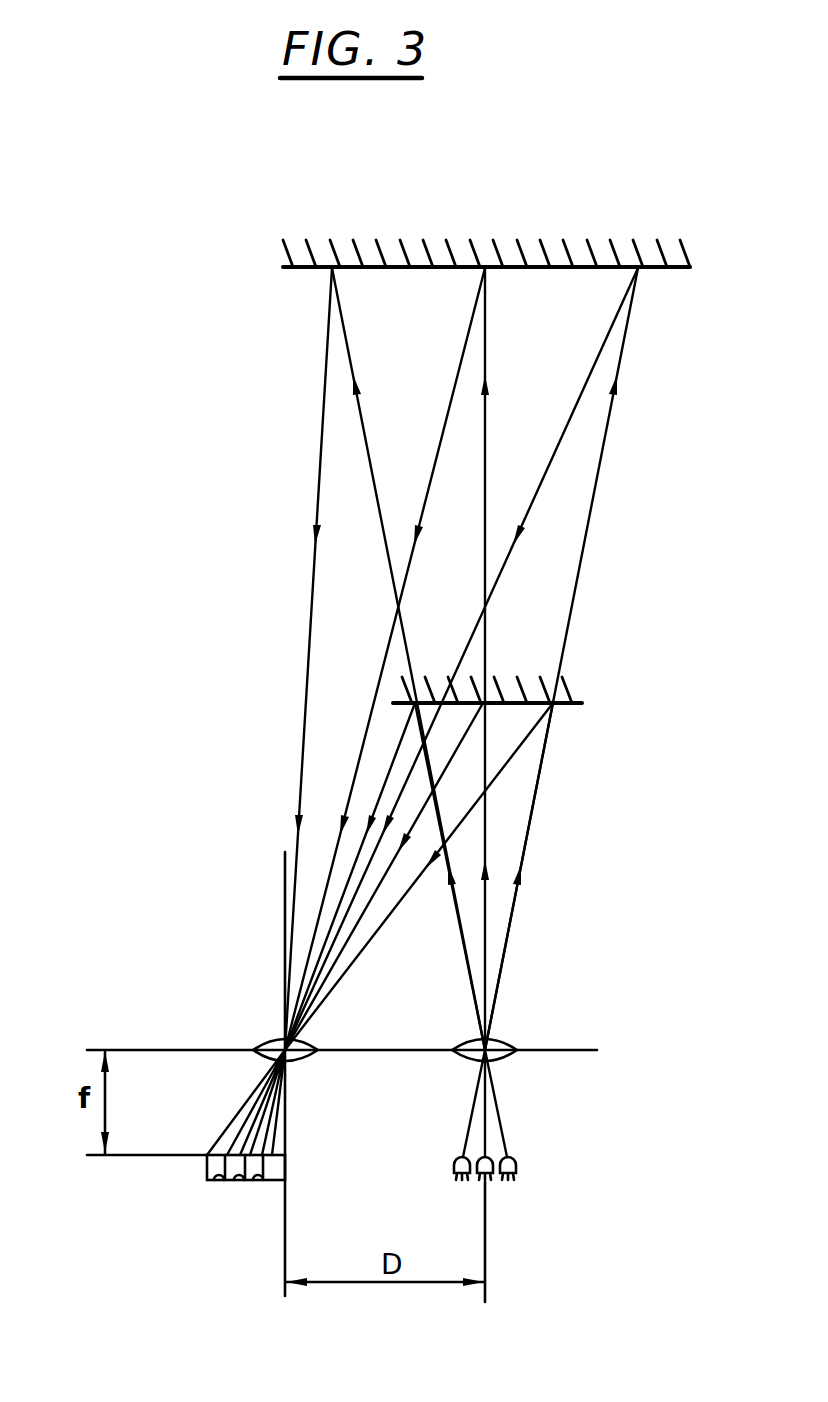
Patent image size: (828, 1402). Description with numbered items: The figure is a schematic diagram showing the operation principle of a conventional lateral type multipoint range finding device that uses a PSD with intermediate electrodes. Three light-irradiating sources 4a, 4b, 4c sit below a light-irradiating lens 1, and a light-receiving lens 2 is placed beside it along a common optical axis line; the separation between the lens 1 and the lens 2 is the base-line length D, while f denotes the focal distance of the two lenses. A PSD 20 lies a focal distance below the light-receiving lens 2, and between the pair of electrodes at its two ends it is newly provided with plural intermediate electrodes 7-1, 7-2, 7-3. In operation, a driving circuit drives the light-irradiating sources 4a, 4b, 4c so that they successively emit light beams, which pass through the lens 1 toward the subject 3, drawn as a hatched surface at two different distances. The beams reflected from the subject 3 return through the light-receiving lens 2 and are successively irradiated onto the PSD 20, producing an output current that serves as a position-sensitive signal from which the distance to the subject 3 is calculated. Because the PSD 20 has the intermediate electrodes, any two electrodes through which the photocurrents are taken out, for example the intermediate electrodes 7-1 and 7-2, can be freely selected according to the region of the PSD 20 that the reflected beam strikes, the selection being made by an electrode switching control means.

The light-irradiating lens 1 is at (506, 1043).
The light-receiving lens 2 is at (306, 1043).
The subject 3 is at (657, 268).
The light-irradiating source 4a is at (455, 1161).
The light-irradiating source 4b is at (496, 1180).
The light-irradiating source 4c is at (515, 1163).
The PSD 20 is at (207, 1163).
The intermediate electrode 7-1 is at (217, 1183).
The intermediate electrode 7-2 is at (237, 1183).
The intermediate electrode 7-3 is at (257, 1183).